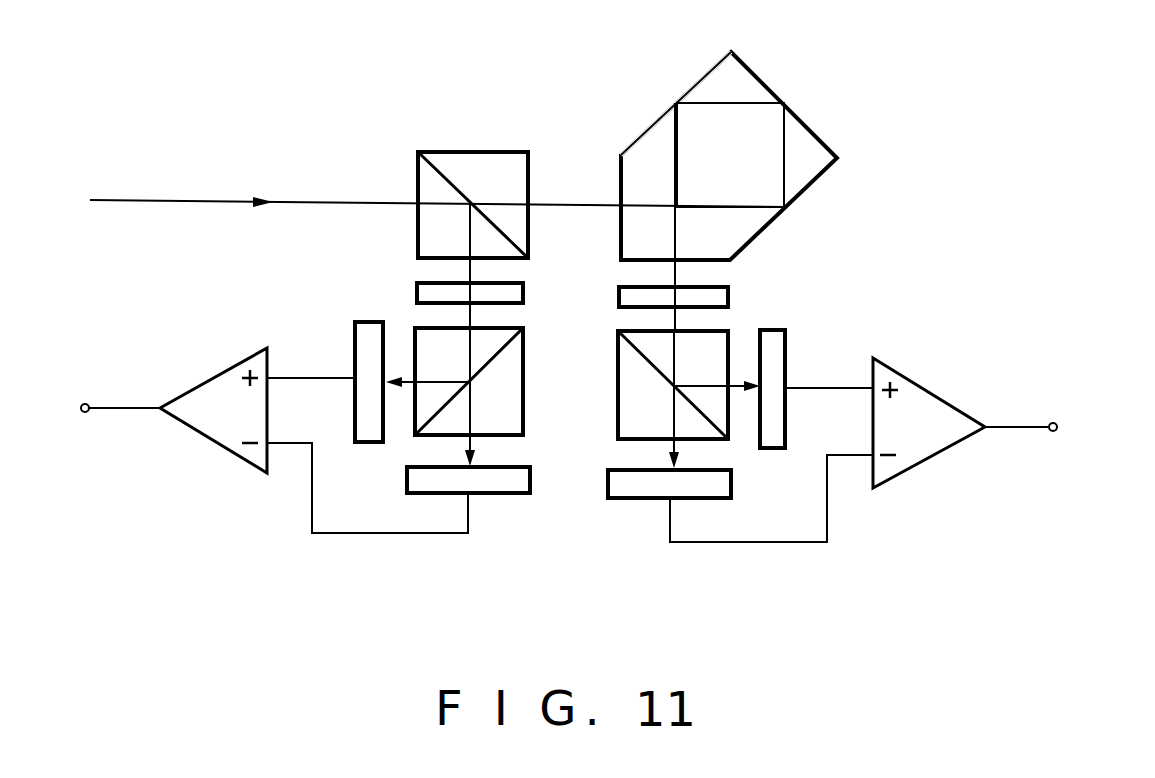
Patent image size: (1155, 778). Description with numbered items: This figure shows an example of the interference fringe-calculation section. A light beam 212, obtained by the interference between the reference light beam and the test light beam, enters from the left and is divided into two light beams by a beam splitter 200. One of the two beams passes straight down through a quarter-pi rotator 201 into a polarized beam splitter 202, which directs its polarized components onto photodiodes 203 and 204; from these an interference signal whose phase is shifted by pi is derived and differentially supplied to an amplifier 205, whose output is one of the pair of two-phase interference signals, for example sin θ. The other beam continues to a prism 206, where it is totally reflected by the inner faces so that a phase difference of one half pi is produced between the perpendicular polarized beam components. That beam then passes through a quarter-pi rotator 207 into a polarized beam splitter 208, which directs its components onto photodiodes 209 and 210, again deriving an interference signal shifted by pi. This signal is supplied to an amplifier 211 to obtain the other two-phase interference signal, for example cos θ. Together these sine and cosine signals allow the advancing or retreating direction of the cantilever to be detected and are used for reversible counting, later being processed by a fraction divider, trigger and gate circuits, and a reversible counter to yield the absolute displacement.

The beam splitter 200 is at (472, 150).
The π/4 rotator 201 is at (523, 293).
The polarized beam splitter 202 is at (531, 382).
The photodiode 203 is at (506, 493).
The photodiode 204 is at (363, 350).
The amplifier 205 is at (213, 388).
The prism 206 is at (763, 80).
The π/4 rotator 207 is at (728, 300).
The polarized beam splitter 208 is at (624, 396).
The photodiode 209 is at (780, 354).
The photodiode 210 is at (633, 492).
The amplifier 211 is at (932, 405).
The light beam 212 is at (198, 198).